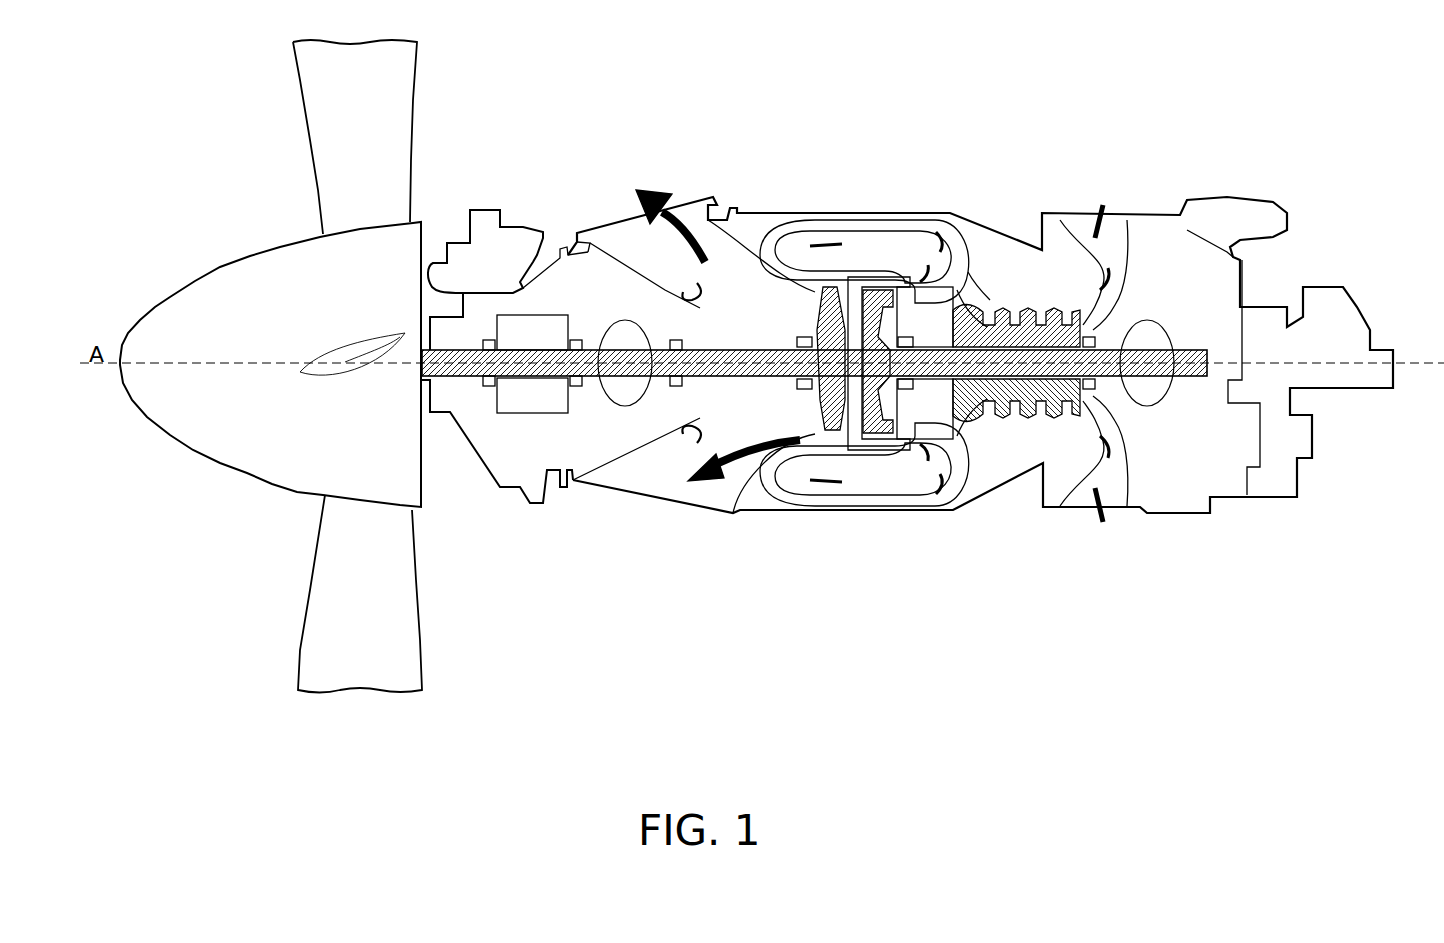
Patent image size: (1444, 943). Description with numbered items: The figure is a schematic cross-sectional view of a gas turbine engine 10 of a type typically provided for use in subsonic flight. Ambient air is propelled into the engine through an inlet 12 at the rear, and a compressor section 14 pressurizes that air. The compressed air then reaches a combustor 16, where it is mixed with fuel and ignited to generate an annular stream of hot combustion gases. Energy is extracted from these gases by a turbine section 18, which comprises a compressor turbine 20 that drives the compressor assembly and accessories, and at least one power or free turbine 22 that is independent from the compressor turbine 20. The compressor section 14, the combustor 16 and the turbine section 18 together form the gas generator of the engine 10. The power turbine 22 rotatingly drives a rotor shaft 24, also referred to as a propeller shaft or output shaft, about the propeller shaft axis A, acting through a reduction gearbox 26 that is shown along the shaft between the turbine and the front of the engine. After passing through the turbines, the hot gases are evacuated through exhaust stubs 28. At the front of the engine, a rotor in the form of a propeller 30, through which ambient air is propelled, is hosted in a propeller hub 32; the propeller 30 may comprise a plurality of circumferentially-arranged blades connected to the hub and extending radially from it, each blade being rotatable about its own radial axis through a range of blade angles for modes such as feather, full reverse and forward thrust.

The gas turbine engine 10 is at (773, 124).
The inlet 12 is at (1105, 194).
The compressor section 14 is at (998, 253).
The combustor 16 is at (887, 247).
The turbine section 18 is at (858, 375).
The compressor turbine 20 is at (875, 365).
The power turbine 22 is at (823, 365).
The rotor shaft 24 is at (550, 403).
The reduction gearbox 26 is at (537, 345).
The exhaust stubs 28 is at (630, 196).
The propeller 30 is at (327, 112).
The propeller hub 32 is at (248, 278).